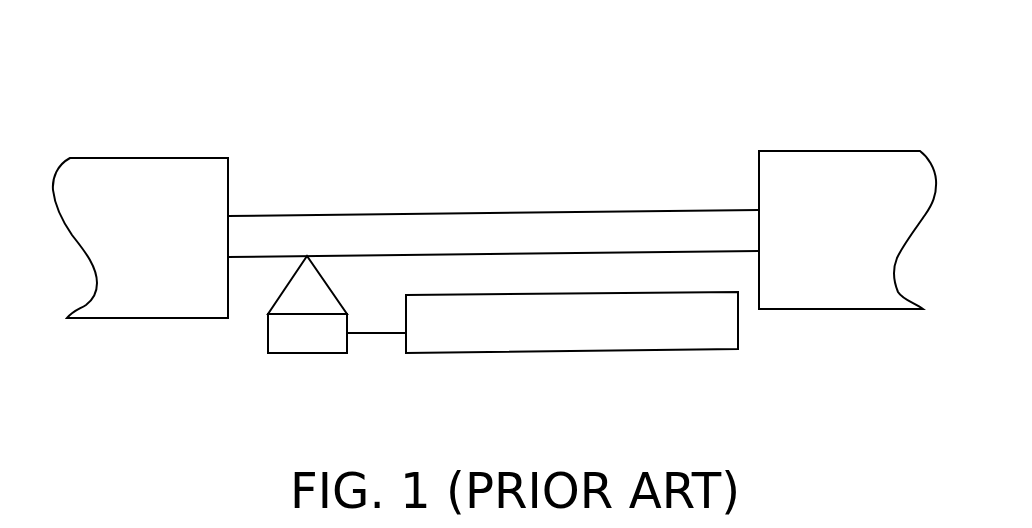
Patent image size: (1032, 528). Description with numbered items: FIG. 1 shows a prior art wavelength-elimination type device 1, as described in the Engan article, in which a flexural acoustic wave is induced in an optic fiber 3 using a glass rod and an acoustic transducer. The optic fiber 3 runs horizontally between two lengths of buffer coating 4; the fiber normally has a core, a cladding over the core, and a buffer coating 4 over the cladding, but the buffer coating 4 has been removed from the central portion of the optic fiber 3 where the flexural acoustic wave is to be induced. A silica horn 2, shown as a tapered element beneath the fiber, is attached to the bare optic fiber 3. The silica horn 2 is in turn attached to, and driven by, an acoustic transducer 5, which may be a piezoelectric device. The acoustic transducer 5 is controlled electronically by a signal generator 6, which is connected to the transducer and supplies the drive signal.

The device 1 is at (666, 69).
The silica horn 2 is at (327, 294).
The optic fiber 3 is at (346, 216).
The buffer coating 4 is at (147, 158).
The acoustic transducer 5 is at (308, 353).
The signal generator 6 is at (464, 353).